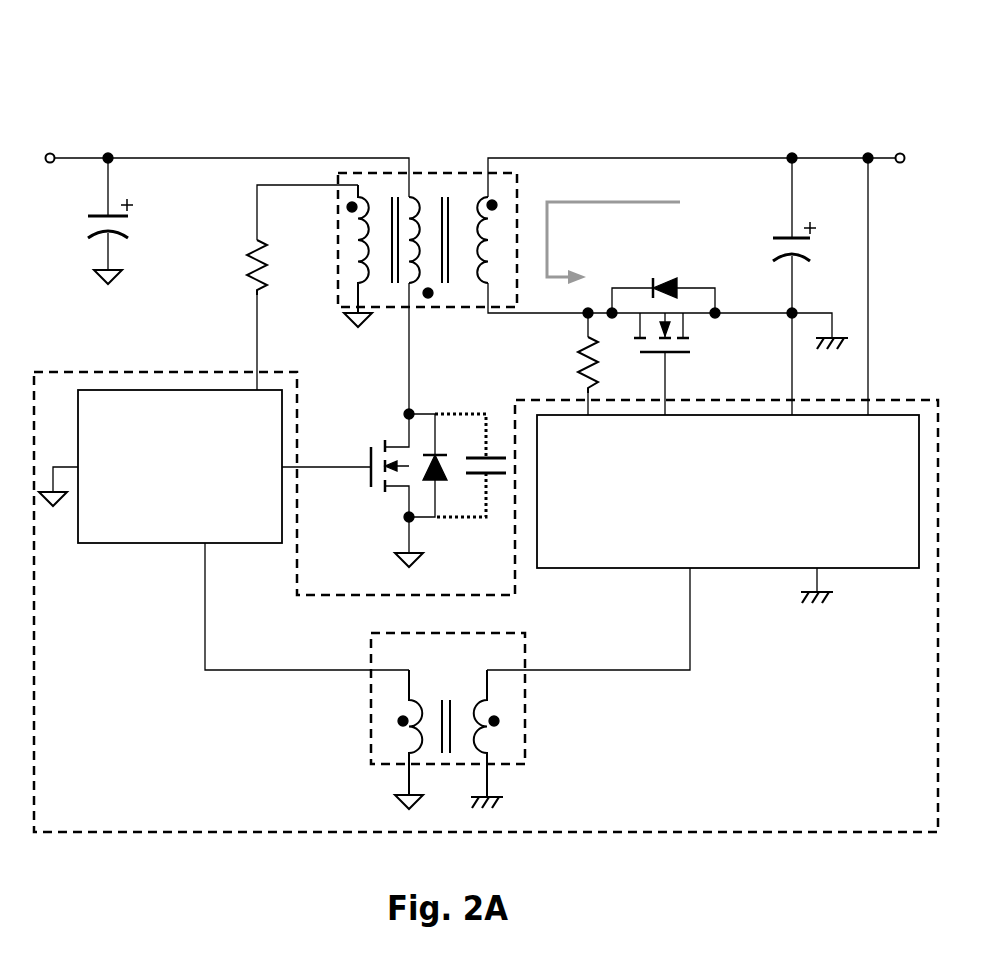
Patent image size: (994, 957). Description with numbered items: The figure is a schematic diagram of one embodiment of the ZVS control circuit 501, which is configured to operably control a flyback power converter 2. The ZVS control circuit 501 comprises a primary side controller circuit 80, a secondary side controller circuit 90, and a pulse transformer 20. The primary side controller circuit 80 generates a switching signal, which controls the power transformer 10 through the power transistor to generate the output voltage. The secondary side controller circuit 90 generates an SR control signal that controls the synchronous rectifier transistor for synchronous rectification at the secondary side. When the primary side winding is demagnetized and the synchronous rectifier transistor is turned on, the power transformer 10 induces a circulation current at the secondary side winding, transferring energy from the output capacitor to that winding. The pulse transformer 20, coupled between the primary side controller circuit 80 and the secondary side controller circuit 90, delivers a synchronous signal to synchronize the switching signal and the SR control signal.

The flyback power converter 2 is at (168, 50).
The power transformer 10 is at (516, 190).
The pulse transformer 20 is at (457, 665).
The primary side controller circuit 80 is at (193, 487).
The secondary side controller circuit 90 is at (720, 495).
The ZVS control circuit 501 is at (905, 809).